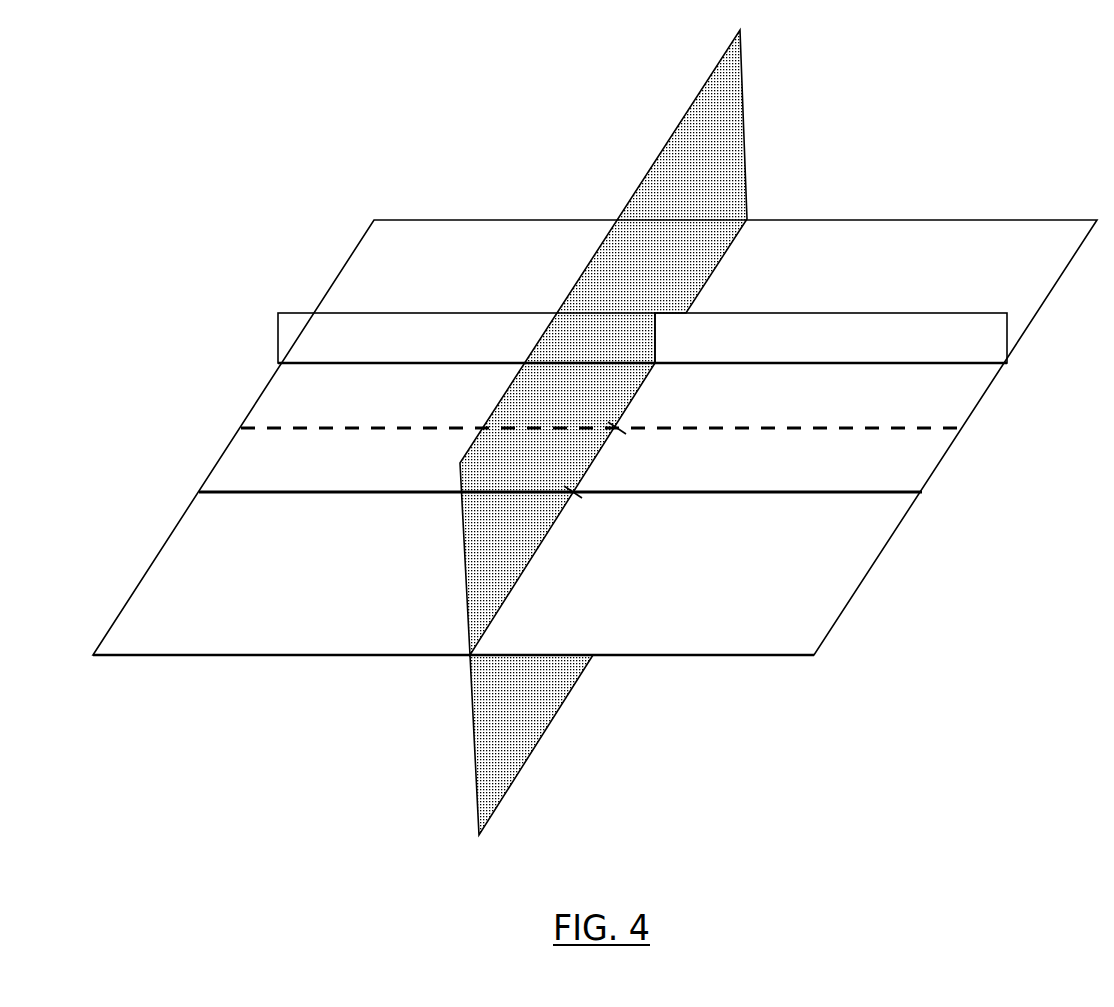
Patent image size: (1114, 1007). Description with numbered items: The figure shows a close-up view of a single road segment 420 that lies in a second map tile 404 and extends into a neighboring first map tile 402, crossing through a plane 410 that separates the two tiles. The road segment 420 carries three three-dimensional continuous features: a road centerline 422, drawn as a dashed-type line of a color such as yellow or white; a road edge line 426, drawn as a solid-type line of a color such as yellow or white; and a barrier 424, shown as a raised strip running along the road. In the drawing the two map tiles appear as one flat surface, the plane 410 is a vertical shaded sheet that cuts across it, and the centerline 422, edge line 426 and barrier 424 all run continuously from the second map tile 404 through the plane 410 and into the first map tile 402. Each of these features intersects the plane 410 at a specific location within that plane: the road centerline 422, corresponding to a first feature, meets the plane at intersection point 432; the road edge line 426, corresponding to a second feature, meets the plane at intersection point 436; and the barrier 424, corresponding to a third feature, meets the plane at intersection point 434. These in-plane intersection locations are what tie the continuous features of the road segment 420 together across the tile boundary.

The first map tile 402 is at (414, 418).
The second map tile 404 is at (775, 415).
The plane 410 is at (603, 432).
The road segment 420 is at (854, 473).
The road centerline 422 is at (602, 404).
The barrier 424 is at (642, 310).
The road edge line 426 is at (560, 520).
The intersection point of road centerline with plane 432 is at (677, 407).
The intersection point of barrier with plane 434 is at (716, 310).
The intersection point of road edge line with plane 436 is at (619, 519).